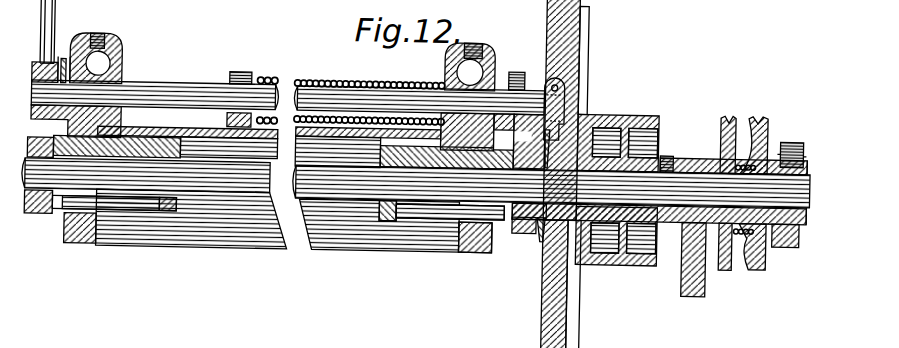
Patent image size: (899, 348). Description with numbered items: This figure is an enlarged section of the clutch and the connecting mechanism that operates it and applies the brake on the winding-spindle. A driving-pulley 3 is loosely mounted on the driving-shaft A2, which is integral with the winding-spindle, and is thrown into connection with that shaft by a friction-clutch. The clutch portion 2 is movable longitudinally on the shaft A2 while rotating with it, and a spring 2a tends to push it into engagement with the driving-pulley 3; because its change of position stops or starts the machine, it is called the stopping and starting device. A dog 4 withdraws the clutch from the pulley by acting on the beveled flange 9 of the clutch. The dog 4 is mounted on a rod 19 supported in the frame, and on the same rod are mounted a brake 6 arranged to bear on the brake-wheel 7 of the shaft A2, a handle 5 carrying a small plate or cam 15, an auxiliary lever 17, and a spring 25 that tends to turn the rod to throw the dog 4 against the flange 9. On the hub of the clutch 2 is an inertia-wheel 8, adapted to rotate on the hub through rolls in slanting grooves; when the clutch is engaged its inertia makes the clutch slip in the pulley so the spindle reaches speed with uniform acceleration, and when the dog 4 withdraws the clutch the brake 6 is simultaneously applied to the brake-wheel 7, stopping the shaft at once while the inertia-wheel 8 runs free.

The clutch portion 2 is at (590, 120).
The spring 2a is at (533, 233).
The driving-pulley 3 is at (632, 262).
The dog 4 is at (554, 123).
The handle 5 is at (56, 32).
The brake 6 is at (522, 136).
The brake-wheel 7 is at (520, 232).
The inertia-wheel 8 is at (583, 29).
The beveled flange 9 is at (543, 237).
The plate or cam 15 is at (62, 66).
The auxiliary lever 17 is at (65, 125).
The rod 19 is at (185, 96).
The spring 25 is at (330, 84).
The driving-shaft A2 is at (225, 198).